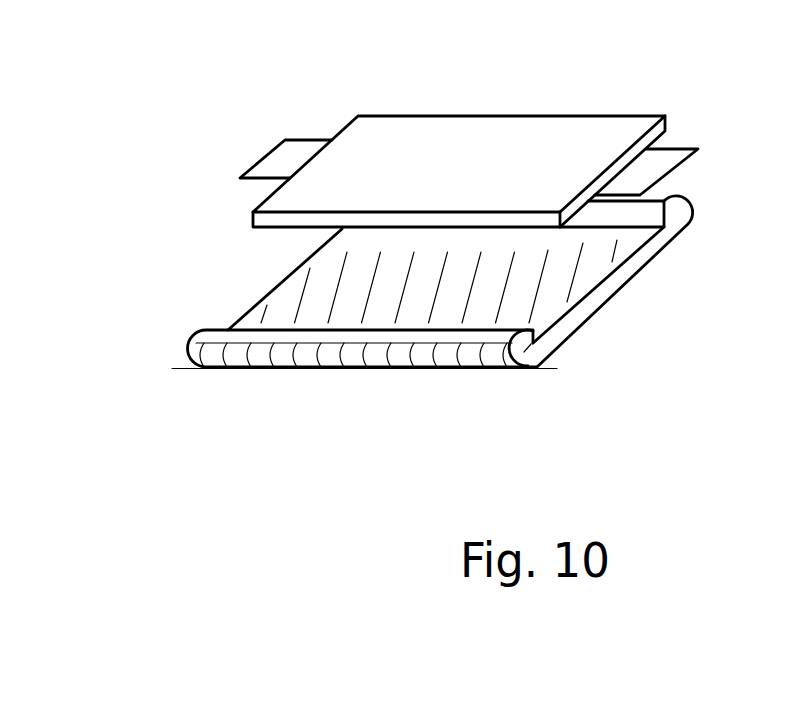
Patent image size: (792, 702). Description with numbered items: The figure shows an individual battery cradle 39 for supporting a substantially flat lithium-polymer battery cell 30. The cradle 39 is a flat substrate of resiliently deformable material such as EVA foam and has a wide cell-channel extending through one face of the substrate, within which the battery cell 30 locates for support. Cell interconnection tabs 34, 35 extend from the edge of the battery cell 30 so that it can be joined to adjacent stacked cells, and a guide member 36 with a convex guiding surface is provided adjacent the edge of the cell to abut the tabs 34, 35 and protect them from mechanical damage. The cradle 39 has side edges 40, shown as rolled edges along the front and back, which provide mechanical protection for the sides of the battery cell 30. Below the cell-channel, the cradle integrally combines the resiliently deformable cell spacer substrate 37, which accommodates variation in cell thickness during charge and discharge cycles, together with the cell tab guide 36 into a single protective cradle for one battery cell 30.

The battery cell 30 is at (478, 150).
The cell interconnection tab 34 is at (295, 155).
The cell interconnection tab 35 is at (667, 160).
The guide member 36 is at (648, 248).
The resiliently deformable substrate 37 is at (553, 289).
The battery cradle 39 is at (281, 408).
The side edge 40 is at (680, 212).